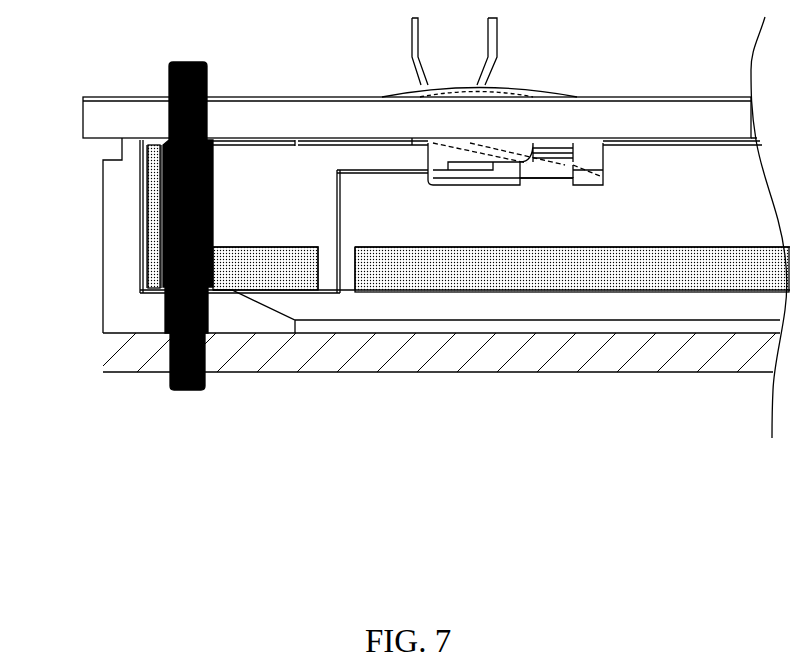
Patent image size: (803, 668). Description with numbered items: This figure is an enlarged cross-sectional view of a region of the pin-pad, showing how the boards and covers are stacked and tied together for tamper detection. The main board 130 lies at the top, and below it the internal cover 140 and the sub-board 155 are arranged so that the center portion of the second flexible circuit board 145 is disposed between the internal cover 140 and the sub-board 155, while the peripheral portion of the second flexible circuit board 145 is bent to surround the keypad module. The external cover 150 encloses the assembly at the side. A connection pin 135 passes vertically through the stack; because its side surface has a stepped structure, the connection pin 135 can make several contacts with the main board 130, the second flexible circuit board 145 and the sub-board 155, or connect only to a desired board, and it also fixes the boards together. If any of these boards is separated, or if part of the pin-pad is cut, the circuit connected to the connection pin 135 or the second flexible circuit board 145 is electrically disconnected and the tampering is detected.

The main board 130 is at (287, 115).
The connection pin 135 is at (185, 393).
The internal cover 140 is at (546, 293).
The second flexible circuit board 145 is at (140, 173).
The external cover 150 is at (108, 208).
The sub-board 155 is at (403, 375).